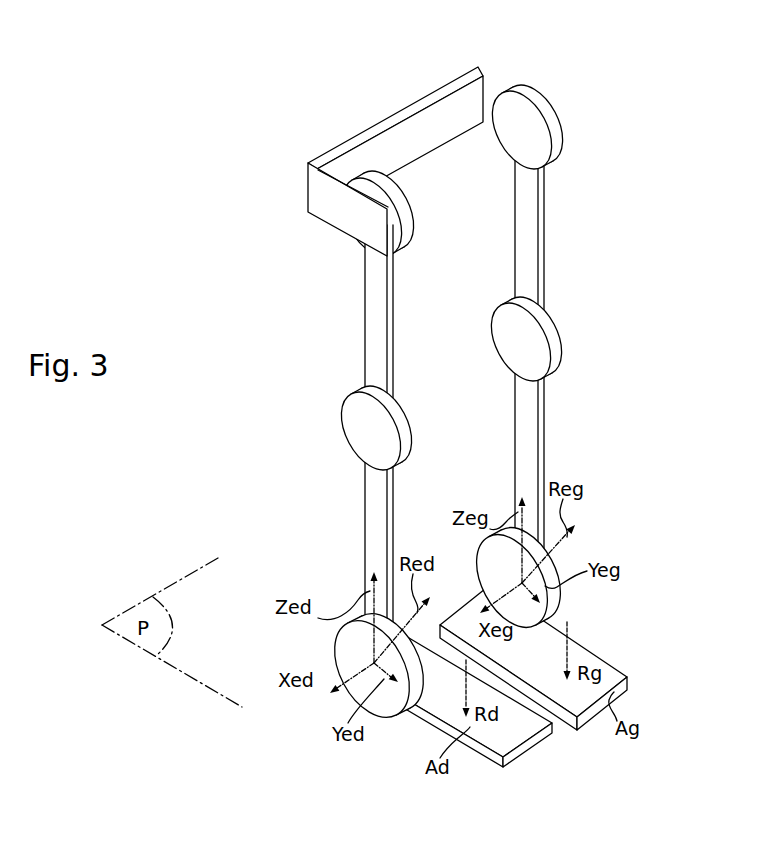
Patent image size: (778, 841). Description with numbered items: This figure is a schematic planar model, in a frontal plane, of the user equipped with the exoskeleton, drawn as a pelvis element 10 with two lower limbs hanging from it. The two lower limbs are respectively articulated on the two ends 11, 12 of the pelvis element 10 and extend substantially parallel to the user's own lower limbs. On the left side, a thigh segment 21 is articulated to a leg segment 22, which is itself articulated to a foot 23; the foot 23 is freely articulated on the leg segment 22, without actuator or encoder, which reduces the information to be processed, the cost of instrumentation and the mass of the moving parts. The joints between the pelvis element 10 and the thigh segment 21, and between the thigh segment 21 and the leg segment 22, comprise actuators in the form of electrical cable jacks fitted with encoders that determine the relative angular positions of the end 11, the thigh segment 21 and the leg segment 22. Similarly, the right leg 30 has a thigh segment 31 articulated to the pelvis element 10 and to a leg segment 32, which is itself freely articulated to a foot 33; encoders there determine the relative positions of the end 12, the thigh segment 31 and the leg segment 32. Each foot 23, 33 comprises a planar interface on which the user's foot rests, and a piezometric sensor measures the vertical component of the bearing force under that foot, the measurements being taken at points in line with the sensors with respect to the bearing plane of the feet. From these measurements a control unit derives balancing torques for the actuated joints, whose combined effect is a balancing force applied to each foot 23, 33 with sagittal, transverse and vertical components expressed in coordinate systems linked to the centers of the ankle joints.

The pelvis element 10 is at (331, 152).
The end of the pelvis element 11 is at (318, 197).
The end of the pelvis element 12 is at (502, 78).
The thigh segment 21 is at (531, 284).
The leg segment 22 is at (536, 424).
The foot 23 is at (630, 696).
The right leg 30 is at (352, 334).
The thigh segment 31 is at (373, 373).
The leg segment 32 is at (357, 540).
The foot 33 is at (547, 732).